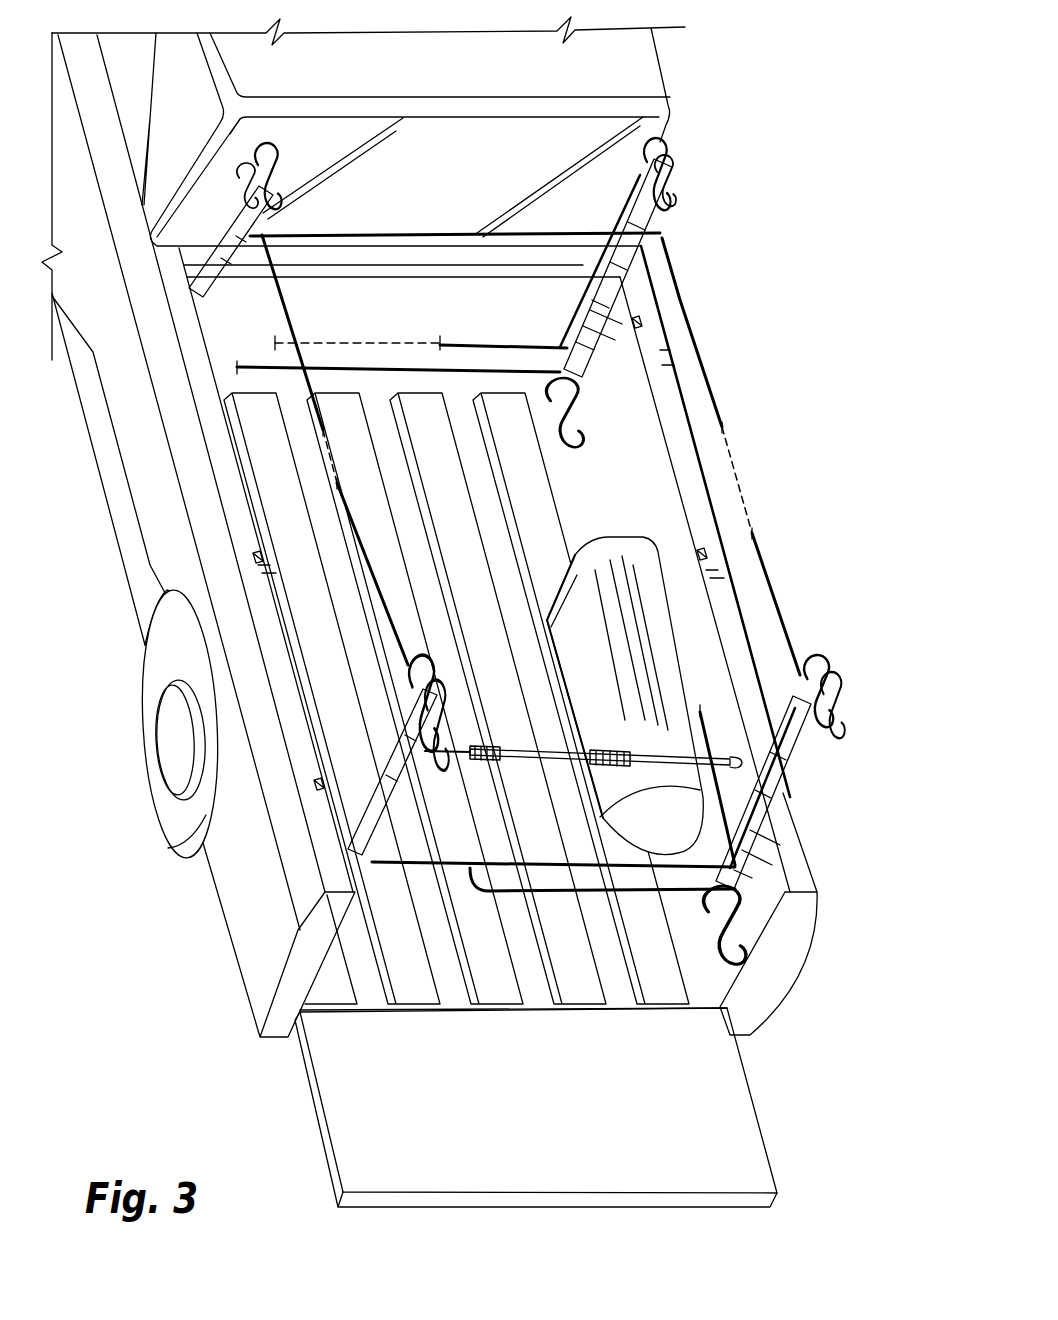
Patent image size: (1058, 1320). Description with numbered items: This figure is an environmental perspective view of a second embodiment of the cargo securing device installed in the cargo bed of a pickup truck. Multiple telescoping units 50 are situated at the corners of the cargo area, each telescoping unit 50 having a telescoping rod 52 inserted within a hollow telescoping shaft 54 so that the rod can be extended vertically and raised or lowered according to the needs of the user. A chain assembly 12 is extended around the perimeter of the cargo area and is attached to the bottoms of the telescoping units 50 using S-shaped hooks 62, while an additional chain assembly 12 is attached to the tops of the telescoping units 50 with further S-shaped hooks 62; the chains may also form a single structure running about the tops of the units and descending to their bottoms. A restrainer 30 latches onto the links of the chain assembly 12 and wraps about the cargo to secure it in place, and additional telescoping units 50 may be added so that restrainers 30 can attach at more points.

The chain assembly 12 is at (710, 396).
The restrainer 30 is at (492, 745).
The telescoping unit 50 is at (641, 259).
The telescoping rod 52 is at (630, 222).
The telescoping shaft 54 is at (613, 304).
The S-shaped hook 62 is at (680, 183).